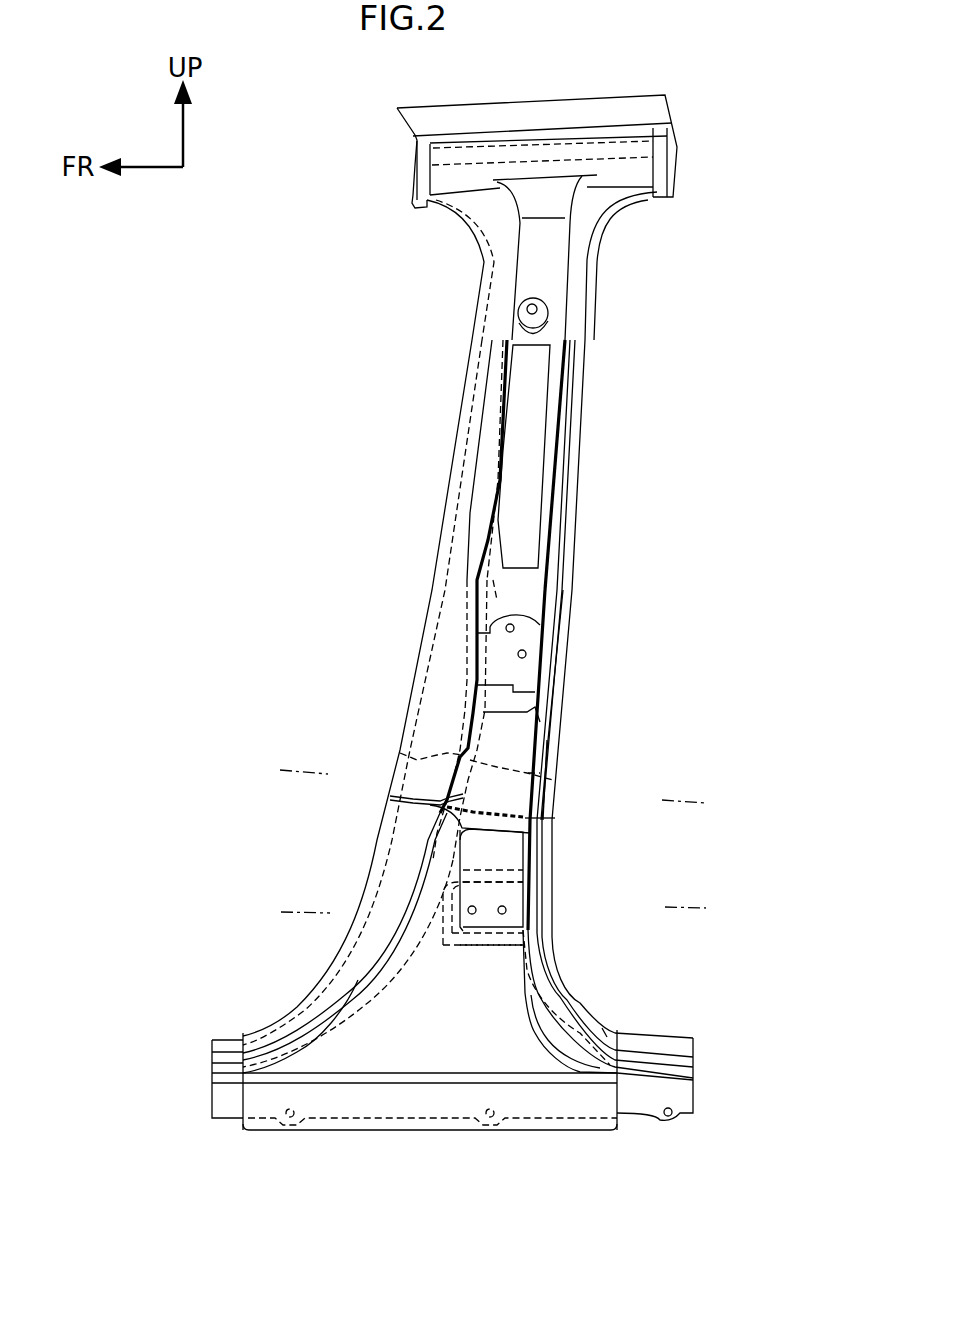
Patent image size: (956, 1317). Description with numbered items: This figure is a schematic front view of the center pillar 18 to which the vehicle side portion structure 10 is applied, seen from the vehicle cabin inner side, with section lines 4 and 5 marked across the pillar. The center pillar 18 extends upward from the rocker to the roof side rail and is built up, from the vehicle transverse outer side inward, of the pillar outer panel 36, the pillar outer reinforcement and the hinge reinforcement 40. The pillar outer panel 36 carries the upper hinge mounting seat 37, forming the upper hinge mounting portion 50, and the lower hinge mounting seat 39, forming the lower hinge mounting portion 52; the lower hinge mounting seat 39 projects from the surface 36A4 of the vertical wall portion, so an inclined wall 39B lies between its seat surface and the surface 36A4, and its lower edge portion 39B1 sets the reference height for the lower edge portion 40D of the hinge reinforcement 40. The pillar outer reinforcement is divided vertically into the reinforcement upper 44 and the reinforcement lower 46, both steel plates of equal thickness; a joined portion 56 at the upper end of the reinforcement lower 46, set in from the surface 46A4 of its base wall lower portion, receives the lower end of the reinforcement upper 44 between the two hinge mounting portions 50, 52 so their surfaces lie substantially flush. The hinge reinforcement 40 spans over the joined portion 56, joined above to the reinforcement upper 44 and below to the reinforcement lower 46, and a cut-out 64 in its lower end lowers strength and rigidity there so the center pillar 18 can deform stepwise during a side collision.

The vehicle side portion structure 10 is at (725, 507).
The center pillar 18 is at (592, 490).
The pillar outer panel 36 is at (563, 710).
The surface of the vertical wall portion 36A4 is at (642, 1108).
The upper hinge mounting seat 37 is at (530, 660).
The lower hinge mounting seat 39 is at (508, 920).
The inclined wall 39B is at (507, 937).
The lower edge portion of the lower hinge mounting seat 39B1 is at (488, 943).
The hinge reinforcement 40 is at (467, 680).
The lower edge portion of the hinge reinforcement 40D is at (477, 935).
The reinforcement upper 44 is at (547, 587).
The reinforcement lower 46 is at (540, 843).
The surface of the base wall lower portion 46A4 is at (560, 1123).
The upper hinge mounting portion 50 is at (560, 603).
The lower hinge mounting portion 52 is at (542, 895).
The joined portion 56 is at (560, 793).
The cut-out 64 is at (460, 860).
The section line 4 is at (280, 769).
The line 5- 5 is at (268, 877).